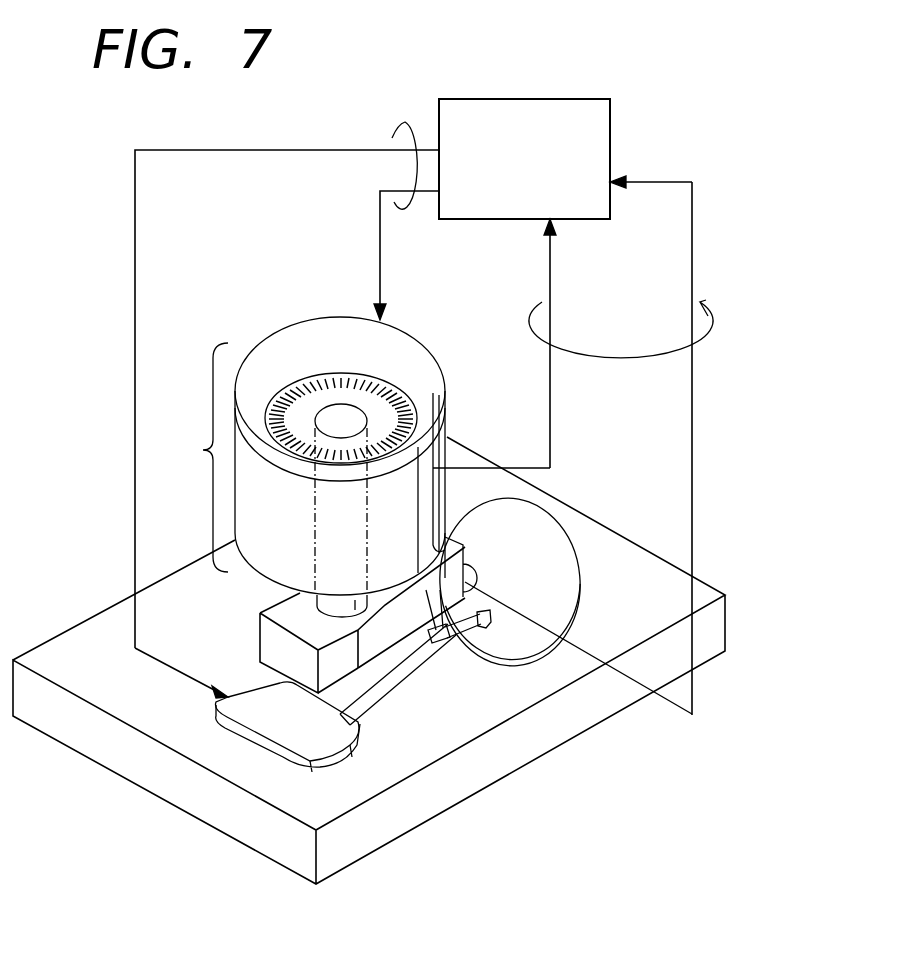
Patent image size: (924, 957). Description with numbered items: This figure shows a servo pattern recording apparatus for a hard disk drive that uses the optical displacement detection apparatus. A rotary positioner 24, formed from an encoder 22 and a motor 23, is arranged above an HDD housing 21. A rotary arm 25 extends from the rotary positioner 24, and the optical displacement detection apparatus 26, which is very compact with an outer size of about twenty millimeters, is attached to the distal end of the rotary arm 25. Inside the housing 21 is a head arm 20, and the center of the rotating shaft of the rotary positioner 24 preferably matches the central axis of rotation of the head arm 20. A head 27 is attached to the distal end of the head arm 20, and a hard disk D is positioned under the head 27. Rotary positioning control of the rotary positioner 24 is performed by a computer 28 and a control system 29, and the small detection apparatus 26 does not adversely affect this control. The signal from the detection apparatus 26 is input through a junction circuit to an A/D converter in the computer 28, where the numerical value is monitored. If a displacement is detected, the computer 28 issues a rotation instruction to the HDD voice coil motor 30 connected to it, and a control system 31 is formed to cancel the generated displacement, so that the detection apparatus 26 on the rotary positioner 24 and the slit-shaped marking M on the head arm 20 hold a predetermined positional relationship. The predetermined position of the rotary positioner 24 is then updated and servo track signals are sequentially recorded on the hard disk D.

The head arm 20 is at (383, 670).
The HDD housing 21 is at (658, 583).
The encoder 22 is at (272, 342).
The motor 23 is at (440, 492).
The rotary positioner 24 is at (197, 457).
The rotary arm 25 is at (272, 648).
The optical displacement detection apparatus 26 is at (457, 562).
The head 27 is at (483, 625).
The computer 28 is at (567, 99).
The control system 29 is at (405, 122).
The HDD voice coil motor 30 is at (283, 740).
The control system 31 is at (708, 316).
The hard disk D is at (557, 557).
The slit-shaped marking M is at (445, 643).